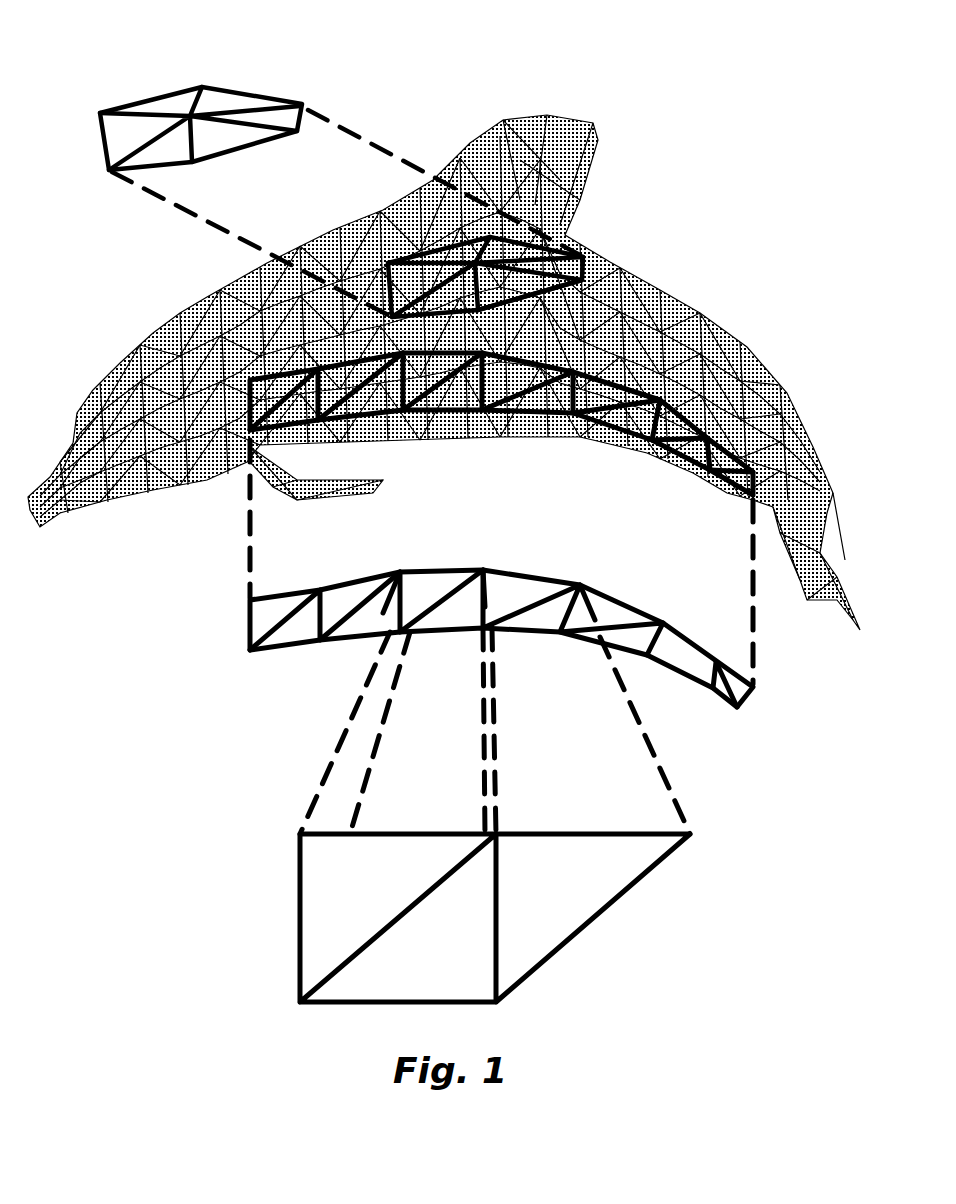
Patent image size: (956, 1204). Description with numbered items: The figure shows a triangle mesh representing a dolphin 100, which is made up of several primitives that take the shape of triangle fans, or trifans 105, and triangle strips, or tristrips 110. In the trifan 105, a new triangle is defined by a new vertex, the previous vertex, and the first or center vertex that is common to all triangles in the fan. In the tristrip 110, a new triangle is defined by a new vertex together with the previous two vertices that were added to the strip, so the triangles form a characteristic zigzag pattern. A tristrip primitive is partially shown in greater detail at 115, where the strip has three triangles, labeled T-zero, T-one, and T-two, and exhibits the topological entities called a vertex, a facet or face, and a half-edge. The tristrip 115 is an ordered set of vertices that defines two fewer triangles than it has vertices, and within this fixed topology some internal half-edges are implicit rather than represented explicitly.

The dolphin 100 is at (702, 310).
The triangle fan (trifan) 105 is at (487, 232).
The triangle strip (tristrip) 110 is at (247, 437).
The tristrip primitive (partially shown) 115 is at (297, 915).